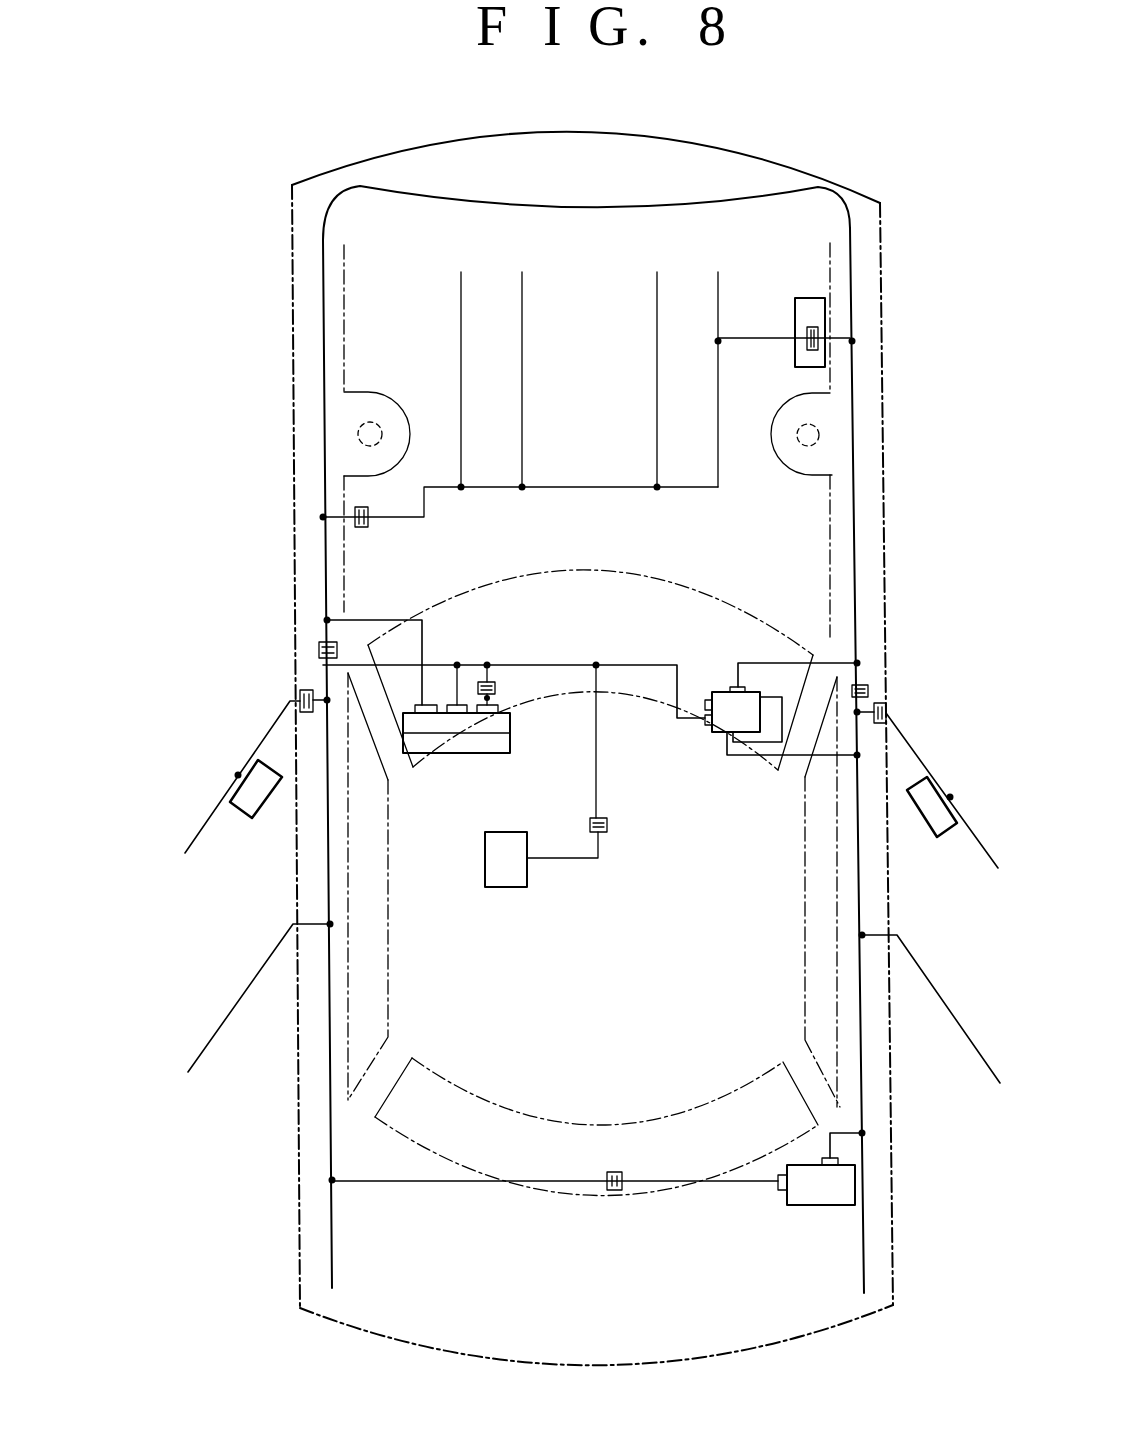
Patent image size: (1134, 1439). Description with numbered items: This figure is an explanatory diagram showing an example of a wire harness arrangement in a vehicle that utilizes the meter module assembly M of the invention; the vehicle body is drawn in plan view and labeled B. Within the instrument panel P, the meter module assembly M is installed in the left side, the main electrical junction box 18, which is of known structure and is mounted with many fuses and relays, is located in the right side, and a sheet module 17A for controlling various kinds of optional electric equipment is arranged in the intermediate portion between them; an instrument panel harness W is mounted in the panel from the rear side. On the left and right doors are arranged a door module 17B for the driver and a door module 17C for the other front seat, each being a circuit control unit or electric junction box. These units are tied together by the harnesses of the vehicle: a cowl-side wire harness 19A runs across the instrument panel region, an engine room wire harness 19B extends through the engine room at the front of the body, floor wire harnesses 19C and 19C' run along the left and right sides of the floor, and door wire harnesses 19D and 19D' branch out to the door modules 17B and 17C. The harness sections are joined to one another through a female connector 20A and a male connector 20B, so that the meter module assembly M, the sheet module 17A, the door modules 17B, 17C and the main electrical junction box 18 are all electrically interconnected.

The vehicle body B is at (883, 297).
The instrument panel P is at (770, 615).
The instrument panel harness W is at (617, 700).
The meter module assembly M is at (512, 728).
The main electrical junction box 18 is at (715, 733).
The sheet module 17A is at (485, 860).
The door module 17B is at (237, 792).
The door module 17C is at (943, 817).
The cowl-side wire harness 19A is at (643, 665).
The engine room wire harness 19B is at (713, 198).
The floor wire harness 19C is at (275, 764).
The floor wire harness 19C' is at (912, 760).
The door wire harness 19D is at (256, 755).
The door wire harness 19D' is at (927, 767).
The female connector 20A is at (493, 690).
The male connector 20B is at (606, 833).